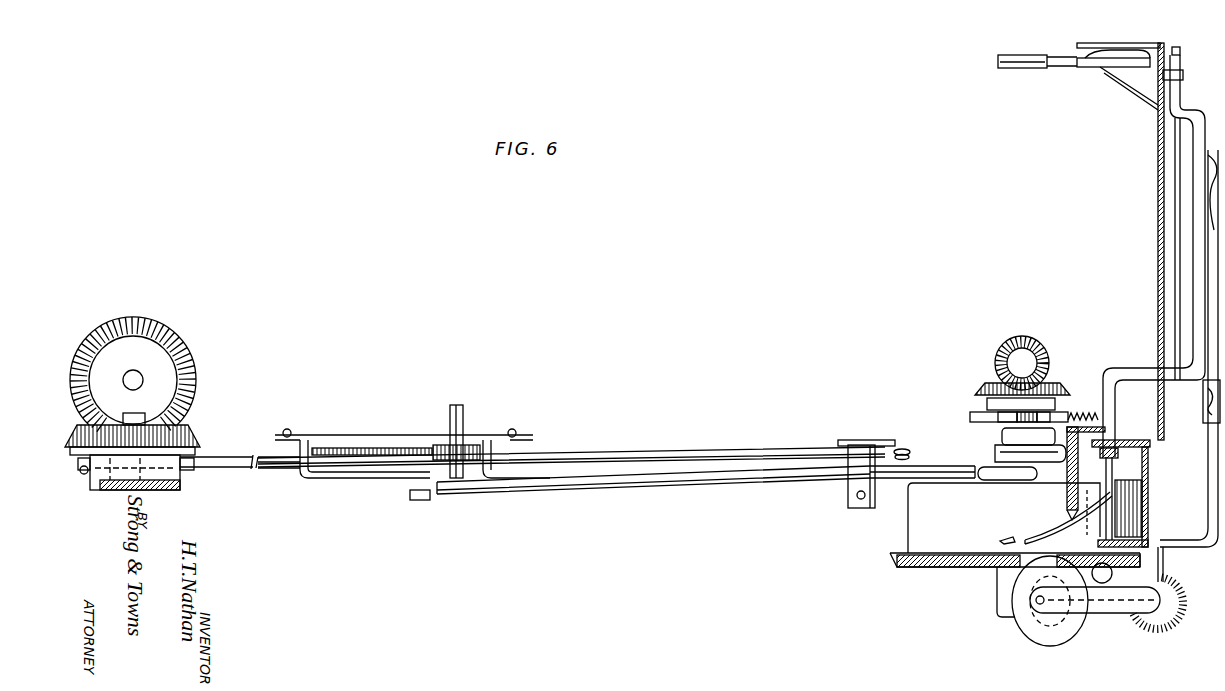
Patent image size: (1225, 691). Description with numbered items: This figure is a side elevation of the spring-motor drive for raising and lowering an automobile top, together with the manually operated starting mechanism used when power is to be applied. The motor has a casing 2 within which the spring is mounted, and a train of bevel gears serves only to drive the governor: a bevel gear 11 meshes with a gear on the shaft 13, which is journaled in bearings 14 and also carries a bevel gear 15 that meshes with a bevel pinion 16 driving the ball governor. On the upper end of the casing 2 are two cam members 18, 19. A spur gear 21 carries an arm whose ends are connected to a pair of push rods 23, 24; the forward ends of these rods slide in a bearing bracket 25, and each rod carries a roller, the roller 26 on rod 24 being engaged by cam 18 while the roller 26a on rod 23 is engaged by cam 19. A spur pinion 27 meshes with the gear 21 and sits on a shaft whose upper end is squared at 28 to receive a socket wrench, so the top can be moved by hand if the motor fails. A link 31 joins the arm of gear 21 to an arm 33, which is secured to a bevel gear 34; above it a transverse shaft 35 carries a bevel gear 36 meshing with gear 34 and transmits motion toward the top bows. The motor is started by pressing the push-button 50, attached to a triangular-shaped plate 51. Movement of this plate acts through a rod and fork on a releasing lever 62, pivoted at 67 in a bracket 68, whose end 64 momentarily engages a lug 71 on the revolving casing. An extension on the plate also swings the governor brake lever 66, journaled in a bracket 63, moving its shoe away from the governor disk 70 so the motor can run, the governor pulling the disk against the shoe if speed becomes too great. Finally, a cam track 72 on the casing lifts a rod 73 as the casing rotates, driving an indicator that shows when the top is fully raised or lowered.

The casing 2 is at (905, 525).
The bevel gear 11 is at (890, 560).
The shaft 13 is at (1165, 603).
The bearings 14 is at (1000, 592).
The bevel gear 15 is at (1168, 628).
The bevel pinion 16 is at (1163, 590).
The cam member 18 is at (996, 472).
The cam member 19 is at (1005, 447).
The spur gear 21 is at (378, 445).
The push rod 23 is at (608, 455).
The push rod 24 is at (648, 488).
The bearing bracket 25 is at (870, 432).
The roller 26 is at (942, 480).
The roller 26a is at (920, 434).
The spur pinion 27 is at (477, 445).
The squared shank 28 is at (458, 410).
The link 31 is at (300, 470).
The arm 33 is at (172, 466).
The bevel gear 34 is at (190, 437).
The shaft 35 is at (145, 380).
The bevel gear 36 is at (190, 400).
The push-button 50 is at (1022, 62).
The triangular-shaped plate 51 is at (1103, 68).
The releasing lever 62 is at (1137, 100).
The bracket 63 is at (1142, 527).
The end of releasing lever 64 is at (1194, 540).
The governor brake lever 66 is at (1140, 352).
The pivot 67 is at (1206, 396).
The bracket 68 is at (1206, 404).
The disk 70 is at (1040, 640).
The lug 71 is at (1010, 535).
The cam track 72 is at (1060, 528).
The rod 73 is at (1066, 488).